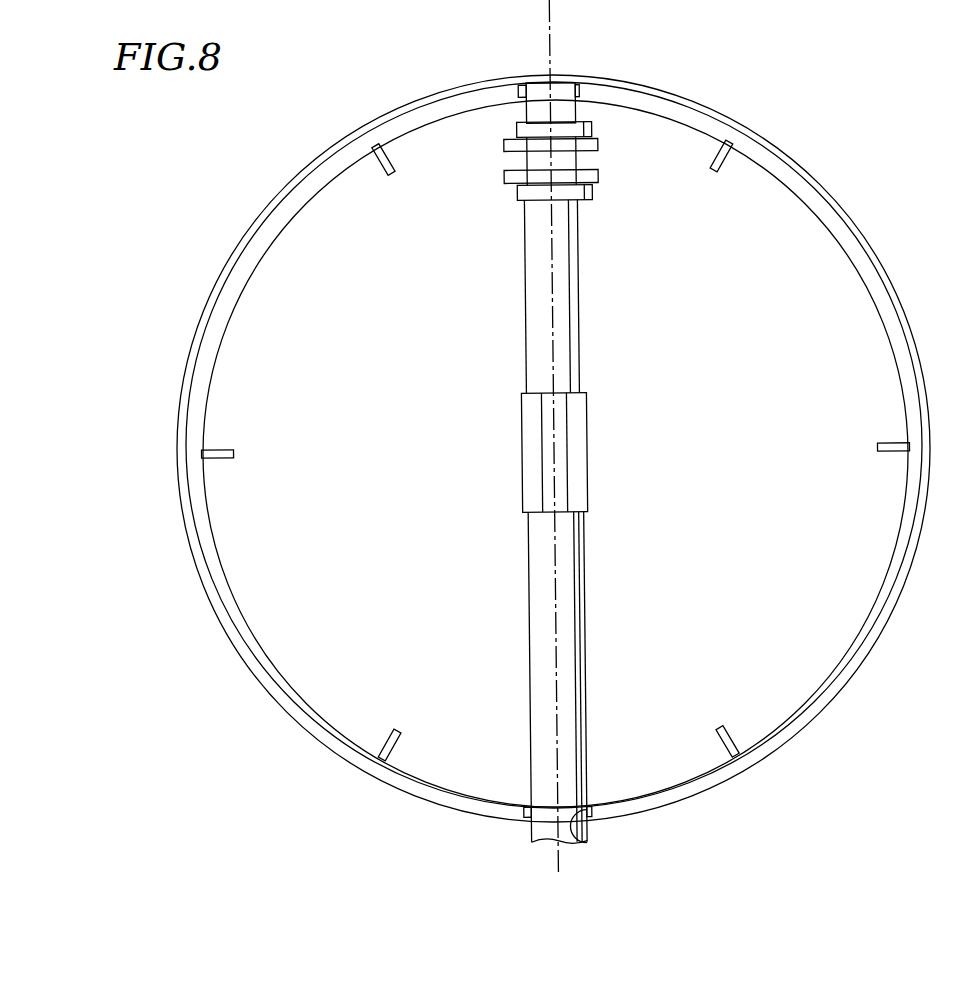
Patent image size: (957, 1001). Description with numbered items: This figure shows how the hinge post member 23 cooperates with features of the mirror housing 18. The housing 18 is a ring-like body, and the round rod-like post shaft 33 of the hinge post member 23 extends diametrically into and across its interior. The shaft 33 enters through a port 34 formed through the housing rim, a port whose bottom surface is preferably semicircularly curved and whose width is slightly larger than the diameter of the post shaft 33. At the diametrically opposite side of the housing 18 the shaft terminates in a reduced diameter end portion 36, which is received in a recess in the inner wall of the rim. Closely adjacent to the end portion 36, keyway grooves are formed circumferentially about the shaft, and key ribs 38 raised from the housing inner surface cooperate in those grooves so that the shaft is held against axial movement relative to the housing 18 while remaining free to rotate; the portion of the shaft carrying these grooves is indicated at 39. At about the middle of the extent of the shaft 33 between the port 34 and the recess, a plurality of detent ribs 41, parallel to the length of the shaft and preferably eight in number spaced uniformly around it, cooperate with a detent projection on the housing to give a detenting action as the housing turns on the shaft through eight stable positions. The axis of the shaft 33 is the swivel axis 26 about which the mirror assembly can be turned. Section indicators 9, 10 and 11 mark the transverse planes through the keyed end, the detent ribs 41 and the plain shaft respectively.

The housing 18 is at (802, 150).
The swivel axis 26 is at (549, 27).
The reduced diameter end portion 36 is at (558, 92).
The key ribs 38 is at (503, 177).
The threaded body between plates 39 is at (545, 150).
The hinge post member 23 is at (536, 308).
The detent ribs 41 is at (572, 408).
The post shaft 33 is at (587, 630).
The port 34 is at (582, 843).
The section line 9- 9 is at (457, 183).
The section line 10- 10 is at (522, 456).
The section line 11- 11 is at (527, 705).